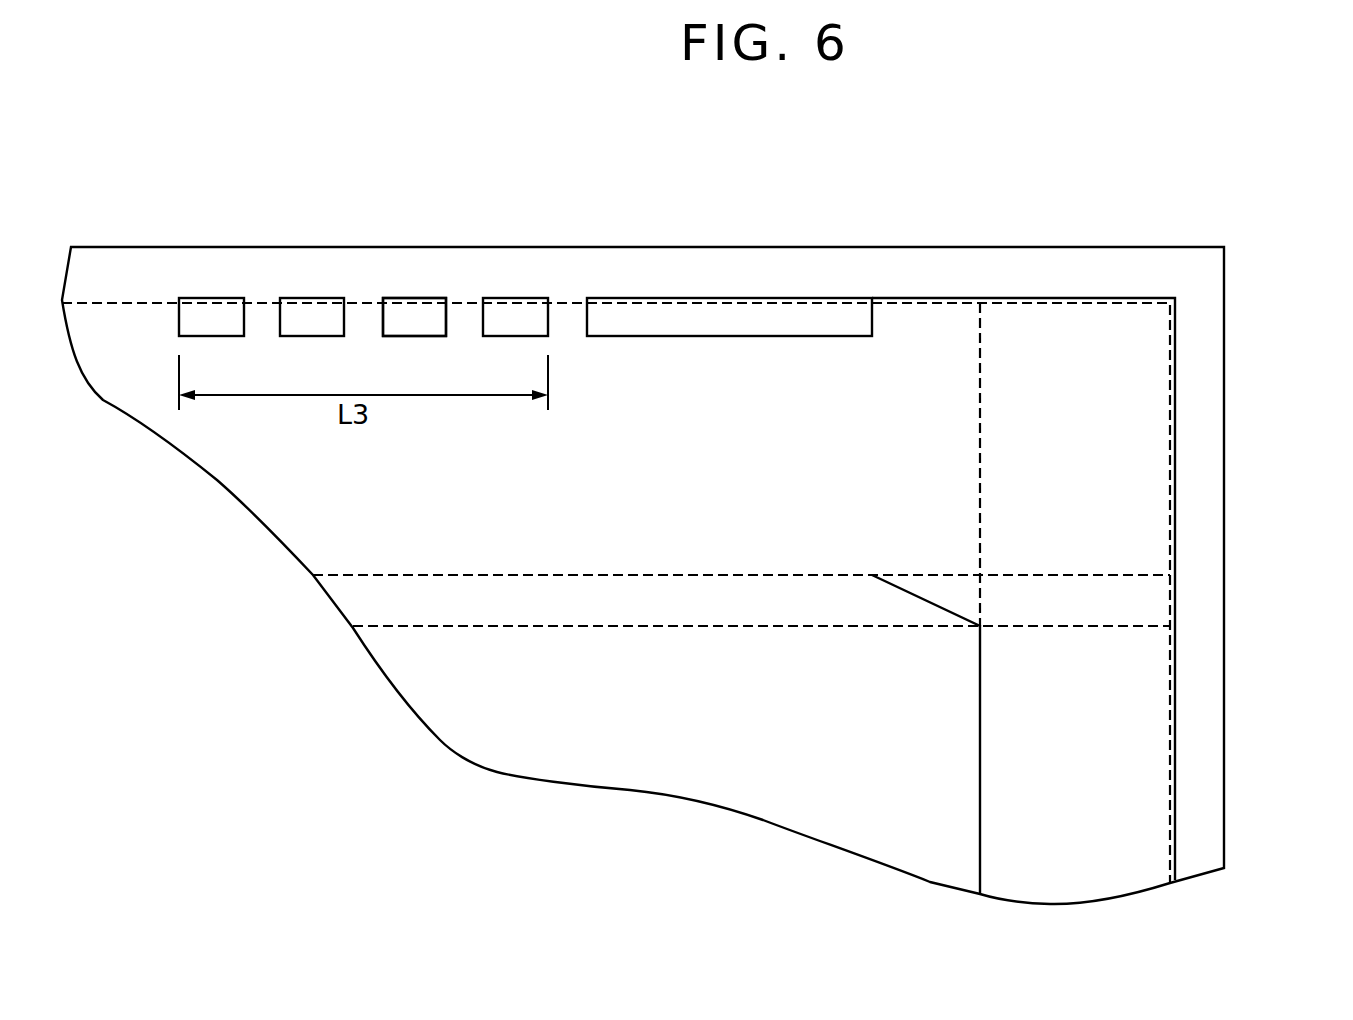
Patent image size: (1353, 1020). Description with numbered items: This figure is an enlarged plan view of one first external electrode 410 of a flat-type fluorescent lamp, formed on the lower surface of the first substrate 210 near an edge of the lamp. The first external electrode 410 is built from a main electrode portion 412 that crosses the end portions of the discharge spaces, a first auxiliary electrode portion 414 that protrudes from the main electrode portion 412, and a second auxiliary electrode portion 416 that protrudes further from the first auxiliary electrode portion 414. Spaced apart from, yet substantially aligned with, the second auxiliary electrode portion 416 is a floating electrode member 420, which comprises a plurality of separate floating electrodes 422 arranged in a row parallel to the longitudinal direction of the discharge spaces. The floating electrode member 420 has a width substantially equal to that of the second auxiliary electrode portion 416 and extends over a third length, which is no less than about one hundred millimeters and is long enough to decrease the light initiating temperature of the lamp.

The first substrate 210 is at (1224, 596).
The first external electrode 410 is at (1175, 483).
The main electrode portion 412 is at (1077, 320).
The first auxiliary electrode portion 414 is at (921, 320).
The second auxiliary electrode portion 416 is at (697, 320).
The floating electrode member 420 is at (310, 292).
The floating electrode 422 is at (416, 320).